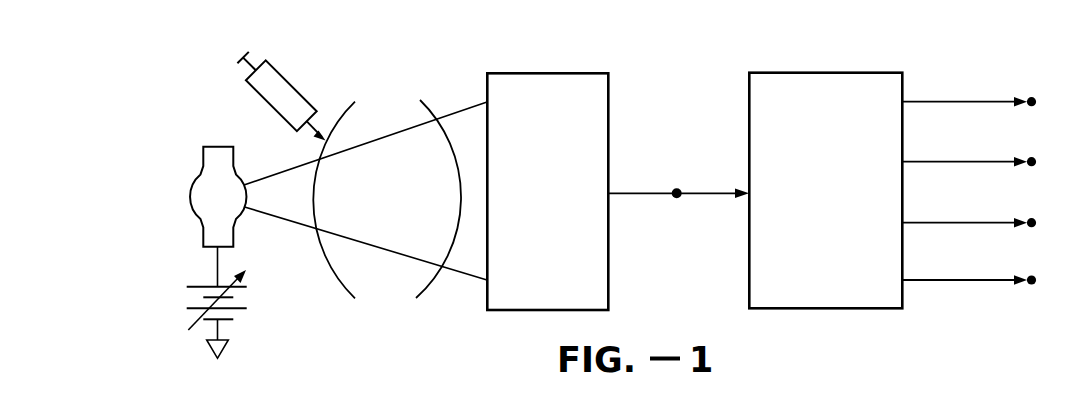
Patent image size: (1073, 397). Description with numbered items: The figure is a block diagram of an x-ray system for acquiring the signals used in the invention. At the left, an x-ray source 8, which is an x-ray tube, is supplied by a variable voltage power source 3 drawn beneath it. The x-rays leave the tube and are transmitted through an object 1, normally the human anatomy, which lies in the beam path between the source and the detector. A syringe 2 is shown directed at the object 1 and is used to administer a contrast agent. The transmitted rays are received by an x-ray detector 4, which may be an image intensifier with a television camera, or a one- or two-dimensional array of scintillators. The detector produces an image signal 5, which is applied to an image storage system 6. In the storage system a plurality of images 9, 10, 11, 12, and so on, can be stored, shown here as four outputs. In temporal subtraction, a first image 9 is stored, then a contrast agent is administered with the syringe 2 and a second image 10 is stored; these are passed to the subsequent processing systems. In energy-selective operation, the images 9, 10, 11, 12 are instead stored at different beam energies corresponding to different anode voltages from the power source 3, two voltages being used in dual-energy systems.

The object 1 is at (389, 204).
The syringe 2 is at (290, 92).
The variable voltage power source 3 is at (180, 308).
The x-ray detector 4 is at (556, 201).
The image signal 5 is at (678, 181).
The image storage system 6 is at (830, 258).
The x-ray source 8 is at (197, 193).
The first image 9 is at (969, 89).
The second image 10 is at (974, 150).
The image 11 is at (975, 211).
The image 12 is at (974, 269).